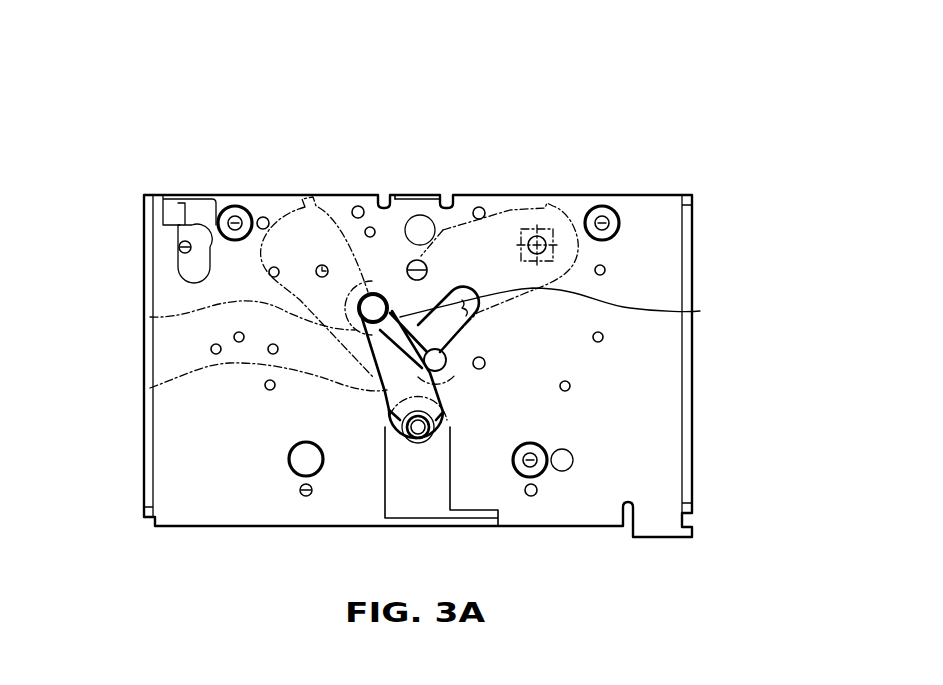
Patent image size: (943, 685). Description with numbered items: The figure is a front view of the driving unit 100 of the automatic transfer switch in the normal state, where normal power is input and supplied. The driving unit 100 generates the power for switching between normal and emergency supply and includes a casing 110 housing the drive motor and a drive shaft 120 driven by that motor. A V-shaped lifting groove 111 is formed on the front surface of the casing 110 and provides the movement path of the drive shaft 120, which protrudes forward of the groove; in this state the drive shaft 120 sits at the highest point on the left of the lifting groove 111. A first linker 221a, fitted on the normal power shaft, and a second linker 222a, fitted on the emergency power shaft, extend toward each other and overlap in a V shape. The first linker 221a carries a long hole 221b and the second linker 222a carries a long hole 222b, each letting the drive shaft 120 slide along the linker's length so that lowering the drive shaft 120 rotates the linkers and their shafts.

The driving unit 100 is at (700, 120).
The casing 110 is at (651, 207).
The lifting groove 111 is at (700, 311).
The drive shaft 120 is at (378, 206).
The first linker 221a is at (508, 207).
The long hole 221b is at (445, 207).
The second linker 222a is at (150, 317).
The long hole 222b is at (150, 388).